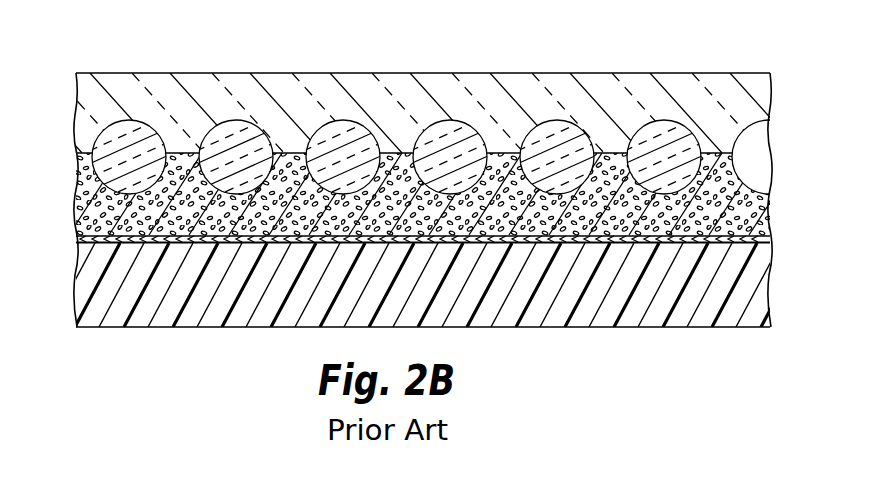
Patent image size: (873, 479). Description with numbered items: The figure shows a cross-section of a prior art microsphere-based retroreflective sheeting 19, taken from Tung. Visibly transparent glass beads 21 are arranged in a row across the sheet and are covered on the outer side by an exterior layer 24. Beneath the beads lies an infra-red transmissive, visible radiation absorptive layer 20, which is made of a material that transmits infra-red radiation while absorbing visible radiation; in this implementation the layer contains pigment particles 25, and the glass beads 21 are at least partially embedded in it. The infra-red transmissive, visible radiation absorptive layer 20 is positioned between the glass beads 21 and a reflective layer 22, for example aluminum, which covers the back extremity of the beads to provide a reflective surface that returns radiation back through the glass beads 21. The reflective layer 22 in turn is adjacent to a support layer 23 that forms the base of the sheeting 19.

The prior art retroreflective sheeting 19 is at (414, 167).
The infra-red transmissive, visible radiation absorptive layer 20 is at (423, 194).
The visibly transparent glass beads 21 is at (770, 155).
The reflective layer 22 is at (770, 239).
The support layer 23 is at (760, 299).
The exterior layer 24 is at (770, 90).
The pigment particles 25 is at (89, 213).